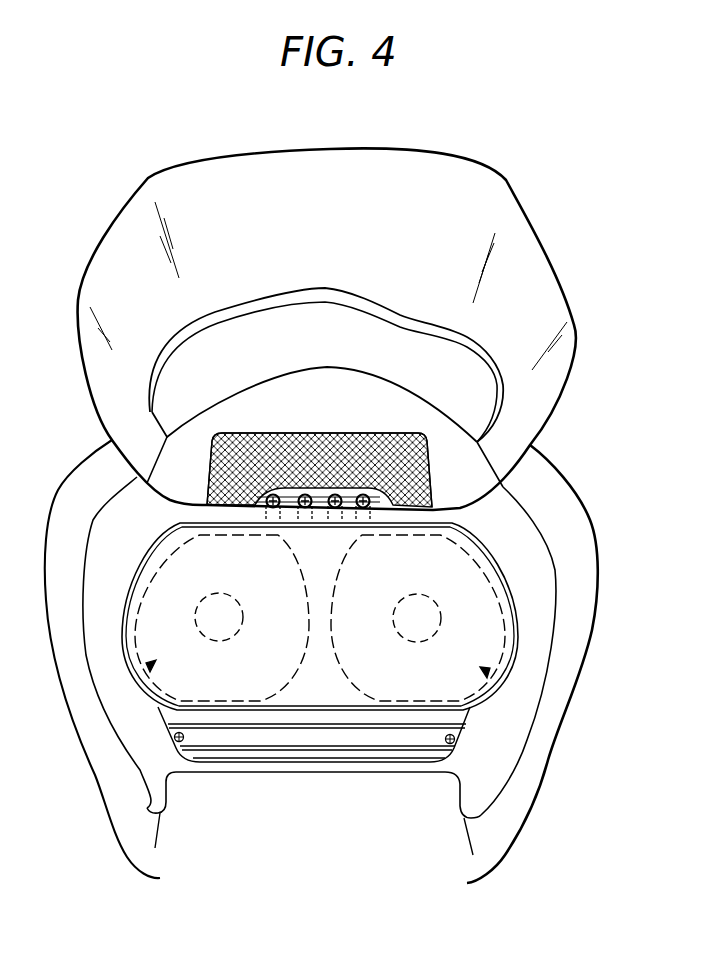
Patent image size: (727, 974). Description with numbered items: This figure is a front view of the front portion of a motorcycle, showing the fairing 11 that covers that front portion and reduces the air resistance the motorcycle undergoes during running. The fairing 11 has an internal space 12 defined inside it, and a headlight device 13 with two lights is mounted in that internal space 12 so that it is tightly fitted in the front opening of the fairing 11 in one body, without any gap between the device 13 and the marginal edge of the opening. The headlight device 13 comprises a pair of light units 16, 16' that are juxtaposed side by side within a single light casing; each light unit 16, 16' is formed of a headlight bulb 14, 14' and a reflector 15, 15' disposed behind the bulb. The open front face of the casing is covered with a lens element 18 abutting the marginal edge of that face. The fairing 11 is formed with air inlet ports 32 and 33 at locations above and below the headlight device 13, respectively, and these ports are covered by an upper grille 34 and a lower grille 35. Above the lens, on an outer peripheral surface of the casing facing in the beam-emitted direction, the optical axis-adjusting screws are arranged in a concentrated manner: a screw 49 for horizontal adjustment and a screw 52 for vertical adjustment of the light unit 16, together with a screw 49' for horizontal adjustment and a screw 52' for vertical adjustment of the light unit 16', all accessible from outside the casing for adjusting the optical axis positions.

The fairing 11 is at (507, 217).
The internal space 12 is at (474, 542).
The headlight device 13 is at (522, 595).
The headlight bulb 14 is at (215, 602).
The headlight bulb 14' is at (436, 617).
The reflector 15 is at (165, 618).
The reflector 15' is at (477, 618).
The light unit 16 is at (98, 705).
The light unit 16' is at (544, 696).
The lens element 18 is at (297, 690).
The air inlet port 32 is at (316, 485).
The upper grille 34 is at (378, 437).
The air inlet port 33 is at (338, 757).
The lower grille 35 is at (383, 753).
The screw 49 is at (265, 542).
The screw 49' is at (390, 531).
The screw 52 is at (318, 534).
The screw 52' is at (350, 557).